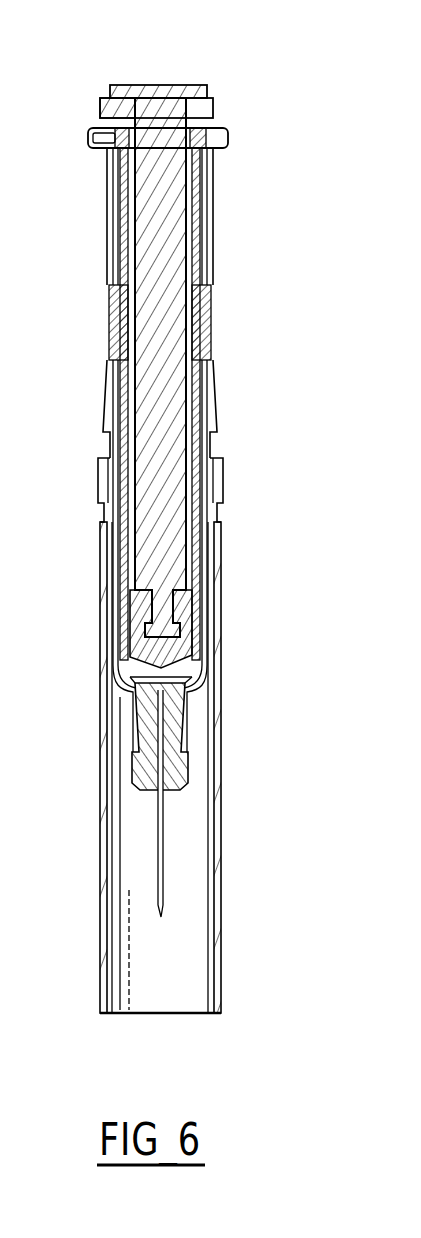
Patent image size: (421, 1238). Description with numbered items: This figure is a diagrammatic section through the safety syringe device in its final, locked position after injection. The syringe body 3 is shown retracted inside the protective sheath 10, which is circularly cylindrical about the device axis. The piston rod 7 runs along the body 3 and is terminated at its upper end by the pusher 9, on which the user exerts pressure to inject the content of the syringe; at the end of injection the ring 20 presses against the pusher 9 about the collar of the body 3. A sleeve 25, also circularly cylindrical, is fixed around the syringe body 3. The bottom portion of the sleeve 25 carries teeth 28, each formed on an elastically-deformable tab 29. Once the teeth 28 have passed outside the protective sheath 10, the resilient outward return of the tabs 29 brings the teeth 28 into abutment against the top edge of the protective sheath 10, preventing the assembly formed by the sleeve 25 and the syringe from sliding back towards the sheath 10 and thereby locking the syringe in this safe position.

The pusher 9 is at (175, 88).
The piston rod 7 is at (158, 250).
The ring 20 is at (207, 115).
The sleeve 25 is at (209, 323).
The body 3 is at (201, 547).
The teeth 28 is at (108, 432).
The elastically-deformable tab 29 is at (108, 475).
The protective sheath 10 is at (217, 858).